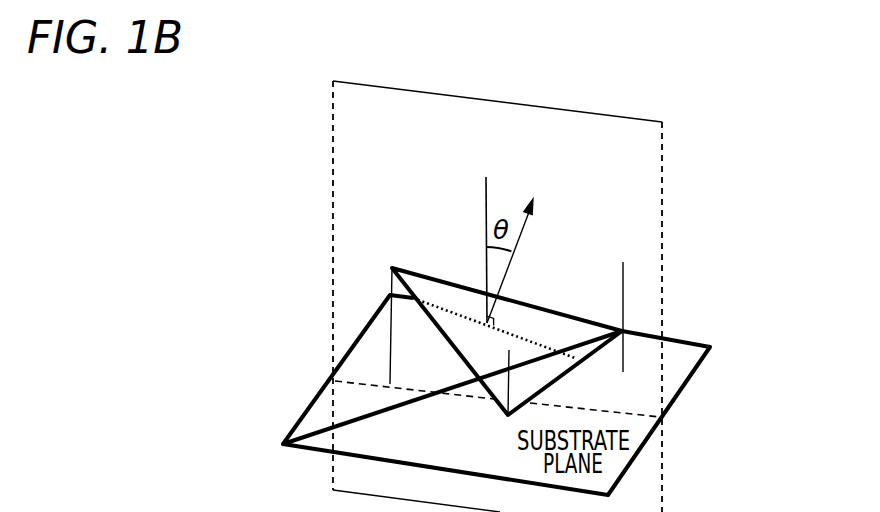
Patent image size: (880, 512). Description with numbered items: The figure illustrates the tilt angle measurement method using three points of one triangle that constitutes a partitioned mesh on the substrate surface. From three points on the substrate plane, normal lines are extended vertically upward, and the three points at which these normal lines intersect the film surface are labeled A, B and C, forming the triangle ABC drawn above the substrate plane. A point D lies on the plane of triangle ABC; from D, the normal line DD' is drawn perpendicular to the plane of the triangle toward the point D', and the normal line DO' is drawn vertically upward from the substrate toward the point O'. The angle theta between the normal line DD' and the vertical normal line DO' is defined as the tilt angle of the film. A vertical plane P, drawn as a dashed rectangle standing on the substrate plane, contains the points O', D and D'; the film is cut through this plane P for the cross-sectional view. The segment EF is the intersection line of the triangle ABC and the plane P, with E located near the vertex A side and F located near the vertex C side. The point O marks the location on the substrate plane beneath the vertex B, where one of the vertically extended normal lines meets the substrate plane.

The plane P is at (497, 296).
The point A is at (382, 314).
The point B is at (505, 404).
The point C is at (633, 317).
The point D is at (489, 337).
The point E is at (403, 344).
The point F is at (592, 374).
The point O is at (493, 414).
The point O' is at (486, 233).
The point D' is at (520, 248).